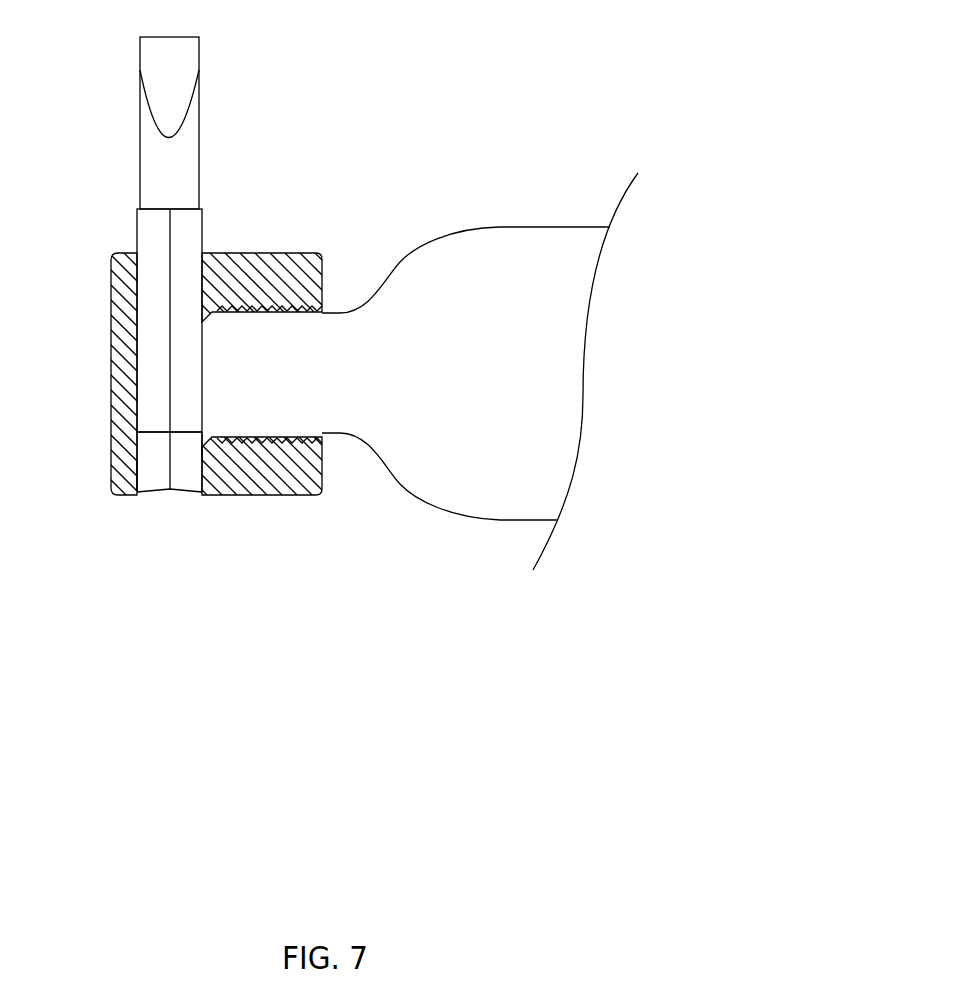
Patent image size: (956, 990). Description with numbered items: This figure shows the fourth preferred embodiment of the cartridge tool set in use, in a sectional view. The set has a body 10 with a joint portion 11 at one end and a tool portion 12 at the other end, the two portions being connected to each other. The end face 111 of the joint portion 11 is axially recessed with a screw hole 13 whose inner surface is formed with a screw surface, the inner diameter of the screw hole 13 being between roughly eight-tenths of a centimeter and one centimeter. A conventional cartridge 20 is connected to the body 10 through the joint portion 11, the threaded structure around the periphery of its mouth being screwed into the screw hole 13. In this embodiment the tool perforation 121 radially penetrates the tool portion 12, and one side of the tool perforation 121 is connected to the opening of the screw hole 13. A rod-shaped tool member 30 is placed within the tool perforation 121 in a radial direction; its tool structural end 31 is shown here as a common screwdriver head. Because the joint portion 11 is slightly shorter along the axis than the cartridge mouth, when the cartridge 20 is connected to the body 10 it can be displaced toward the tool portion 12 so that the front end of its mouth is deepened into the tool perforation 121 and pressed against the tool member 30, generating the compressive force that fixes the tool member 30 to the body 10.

The body 10 is at (274, 381).
The joint portion 11 is at (340, 538).
The end face 111 is at (322, 283).
The tool portion 12 is at (110, 528).
The tool perforation 121 is at (138, 470).
The screw hole 13 is at (199, 455).
The cartridge 20 is at (555, 227).
The tool member 30 is at (146, 238).
The tool structural end 31 is at (139, 120).